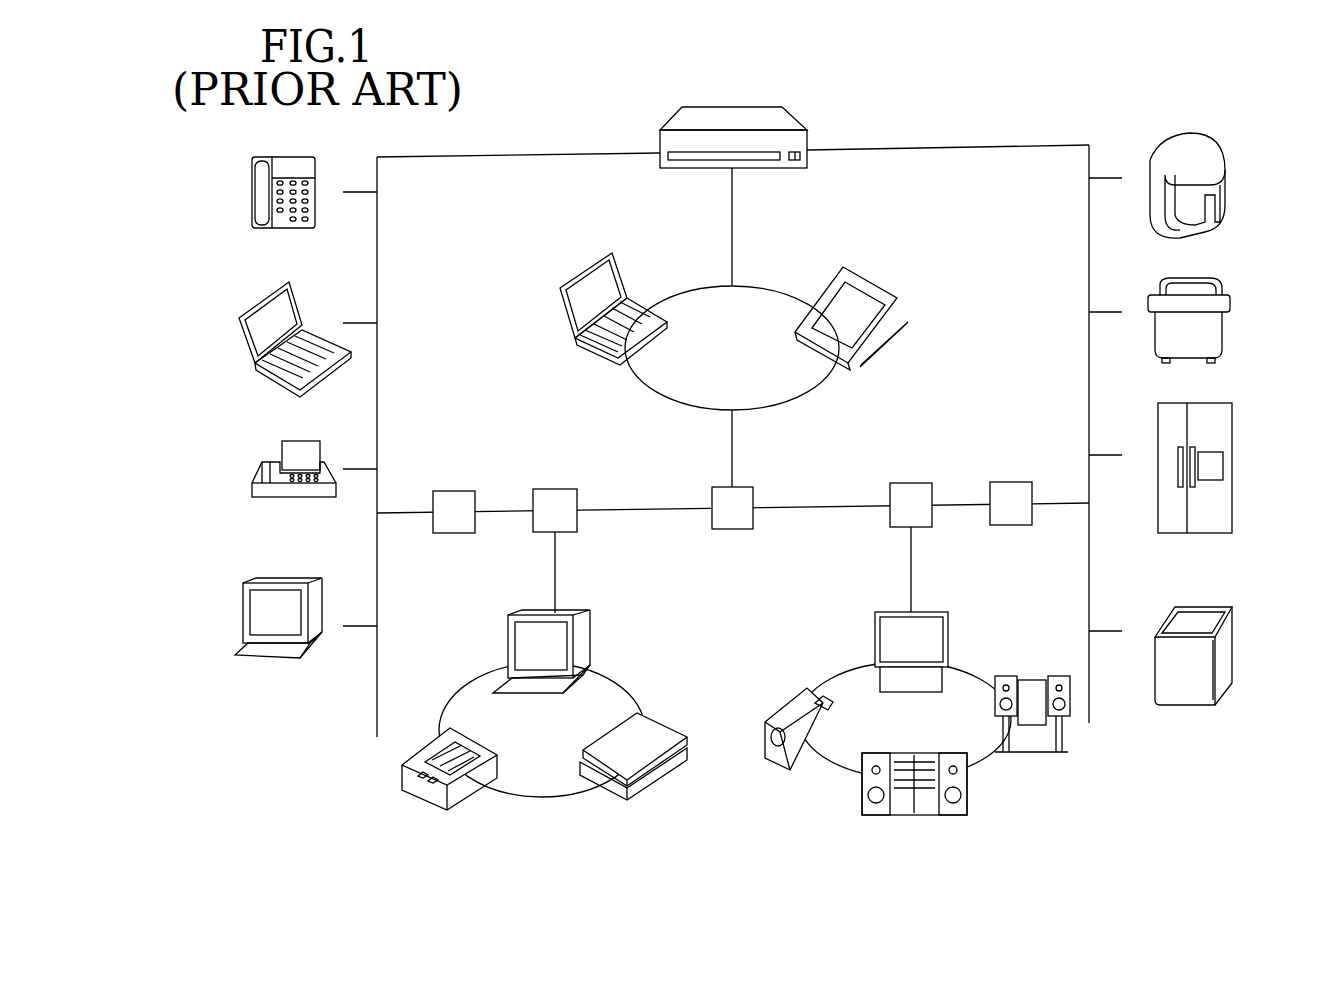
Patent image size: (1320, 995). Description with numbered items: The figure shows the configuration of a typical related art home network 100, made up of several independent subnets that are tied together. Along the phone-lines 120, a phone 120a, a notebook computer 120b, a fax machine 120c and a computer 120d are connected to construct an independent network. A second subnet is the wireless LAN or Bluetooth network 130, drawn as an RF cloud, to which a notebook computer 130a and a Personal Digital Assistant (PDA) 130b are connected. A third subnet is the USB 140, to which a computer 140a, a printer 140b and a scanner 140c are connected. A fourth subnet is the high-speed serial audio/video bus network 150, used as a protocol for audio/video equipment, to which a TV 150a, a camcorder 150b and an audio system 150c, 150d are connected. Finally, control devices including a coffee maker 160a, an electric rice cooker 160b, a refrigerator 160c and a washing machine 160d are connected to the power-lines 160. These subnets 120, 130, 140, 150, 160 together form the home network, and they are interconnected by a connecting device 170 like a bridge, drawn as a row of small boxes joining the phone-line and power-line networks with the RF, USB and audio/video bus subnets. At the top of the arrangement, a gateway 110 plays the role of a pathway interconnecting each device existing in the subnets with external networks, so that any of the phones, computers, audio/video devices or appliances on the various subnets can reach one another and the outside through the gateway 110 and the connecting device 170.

The home network system 100 is at (856, 95).
The gateway 110 is at (733, 107).
The phone-lines 120 is at (544, 157).
The phone 120a is at (256, 230).
The notebook computer 120b is at (256, 372).
The fax machine 120c is at (256, 490).
The computer 120d is at (258, 656).
The wireless LAN or Bluetooth network 130 is at (805, 394).
The notebook computer 130a is at (582, 360).
The Personal Digital Assistant (PDA) 130b is at (868, 300).
The USB 140 is at (627, 679).
The computer 140a is at (510, 645).
The printer 140b is at (426, 787).
The scanner 140c is at (650, 776).
The IEEE 1394 network 150 is at (980, 673).
The TV 150a is at (887, 638).
The camcorder 150b is at (782, 757).
The audio system 150c is at (860, 786).
The audio system 150d is at (1033, 745).
The power-lines 160 is at (988, 148).
The coffee maker 160a is at (1230, 215).
The electric rice cooker 160b is at (1220, 340).
The refrigerator 160c is at (1220, 525).
The washing machine 160d is at (1220, 677).
The connecting device 170 is at (718, 487).